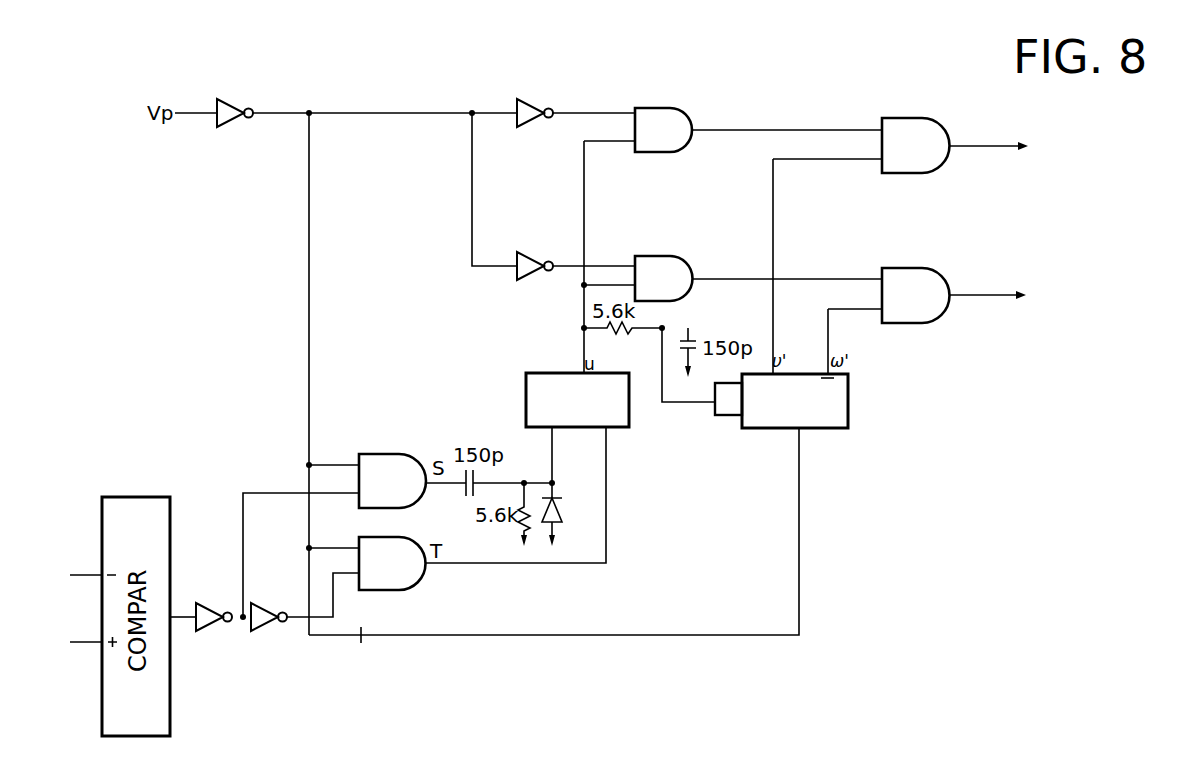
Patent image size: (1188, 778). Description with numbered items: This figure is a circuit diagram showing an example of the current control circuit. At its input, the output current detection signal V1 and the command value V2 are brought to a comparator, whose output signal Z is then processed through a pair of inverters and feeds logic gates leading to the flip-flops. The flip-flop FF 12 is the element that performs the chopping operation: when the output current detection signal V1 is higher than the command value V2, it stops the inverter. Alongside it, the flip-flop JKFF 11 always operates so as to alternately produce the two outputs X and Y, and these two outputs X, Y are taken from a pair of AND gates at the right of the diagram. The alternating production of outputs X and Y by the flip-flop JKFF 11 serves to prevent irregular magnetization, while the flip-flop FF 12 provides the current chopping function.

The flip-flop JKFF 11 is at (849, 425).
The flip-flop FF 12 is at (631, 414).
The output current detection signal V1 is at (80, 643).
The command value V2 is at (79, 575).
The comparator output signal Z is at (183, 631).
The output X is at (989, 134).
The output Y is at (988, 284).